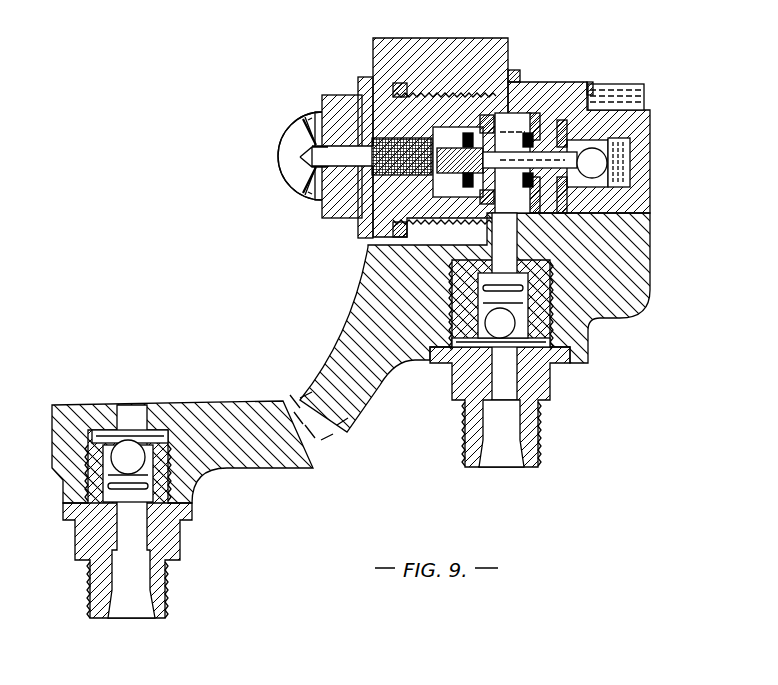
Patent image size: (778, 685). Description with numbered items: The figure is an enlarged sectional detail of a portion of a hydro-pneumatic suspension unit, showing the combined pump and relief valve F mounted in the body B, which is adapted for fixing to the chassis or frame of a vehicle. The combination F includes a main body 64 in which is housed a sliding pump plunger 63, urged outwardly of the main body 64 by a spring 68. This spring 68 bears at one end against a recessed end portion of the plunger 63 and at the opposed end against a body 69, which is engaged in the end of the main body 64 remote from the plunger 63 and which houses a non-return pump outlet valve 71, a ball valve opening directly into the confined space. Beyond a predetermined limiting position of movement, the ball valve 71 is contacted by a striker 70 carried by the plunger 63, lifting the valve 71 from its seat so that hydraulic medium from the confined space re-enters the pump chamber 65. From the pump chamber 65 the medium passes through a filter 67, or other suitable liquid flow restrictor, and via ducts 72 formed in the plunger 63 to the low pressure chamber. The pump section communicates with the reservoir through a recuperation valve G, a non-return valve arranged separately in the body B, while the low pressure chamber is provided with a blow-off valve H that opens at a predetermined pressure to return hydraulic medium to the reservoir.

The pump plunger 63 is at (288, 152).
The main body 64 is at (342, 107).
The pump chamber 65 is at (507, 128).
The filter 67 is at (397, 137).
The spring 68 is at (515, 133).
The body 69 is at (548, 123).
The striker 70 is at (443, 153).
The non-return pump outlet valve 71 is at (592, 160).
The ducts 72 is at (305, 132).
The combined pump and relief valve F is at (320, 105).
The recuperation valve G is at (553, 397).
The blow-off valve H is at (58, 530).
The body B is at (337, 430).